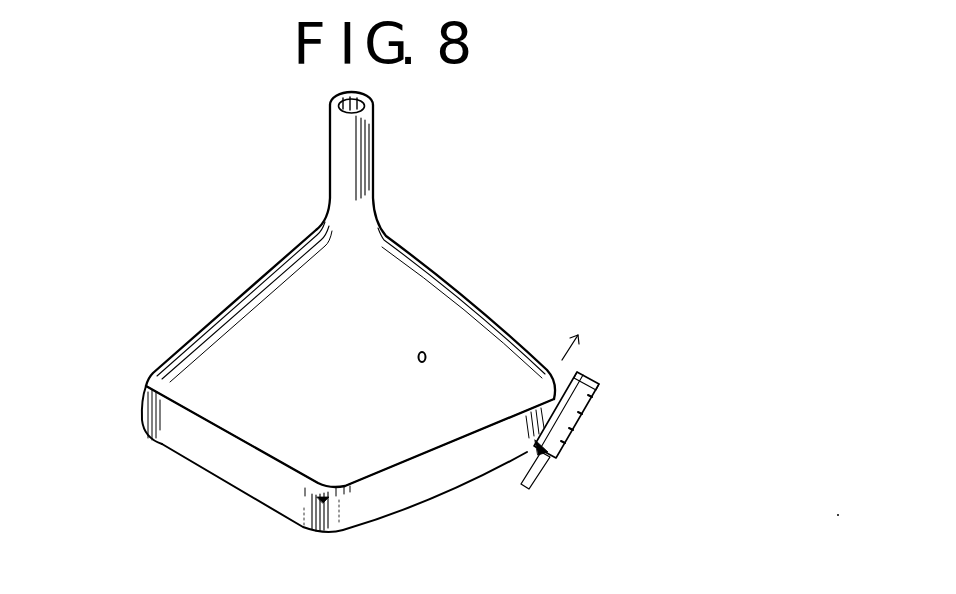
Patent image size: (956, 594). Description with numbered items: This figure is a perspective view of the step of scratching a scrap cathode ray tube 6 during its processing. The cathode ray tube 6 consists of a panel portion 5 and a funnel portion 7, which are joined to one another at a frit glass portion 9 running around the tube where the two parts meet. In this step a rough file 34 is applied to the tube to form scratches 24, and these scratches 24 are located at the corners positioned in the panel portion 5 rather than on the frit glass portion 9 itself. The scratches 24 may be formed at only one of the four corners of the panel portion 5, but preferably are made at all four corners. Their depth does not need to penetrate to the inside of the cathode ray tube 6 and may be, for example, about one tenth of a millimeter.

The panel portion 5 is at (213, 445).
The cathode ray tube 6 is at (309, 330).
The funnel portion 7 is at (413, 285).
The frit glass portion 9 is at (472, 427).
The scratches 24 is at (145, 395).
The rough file 34 is at (590, 417).